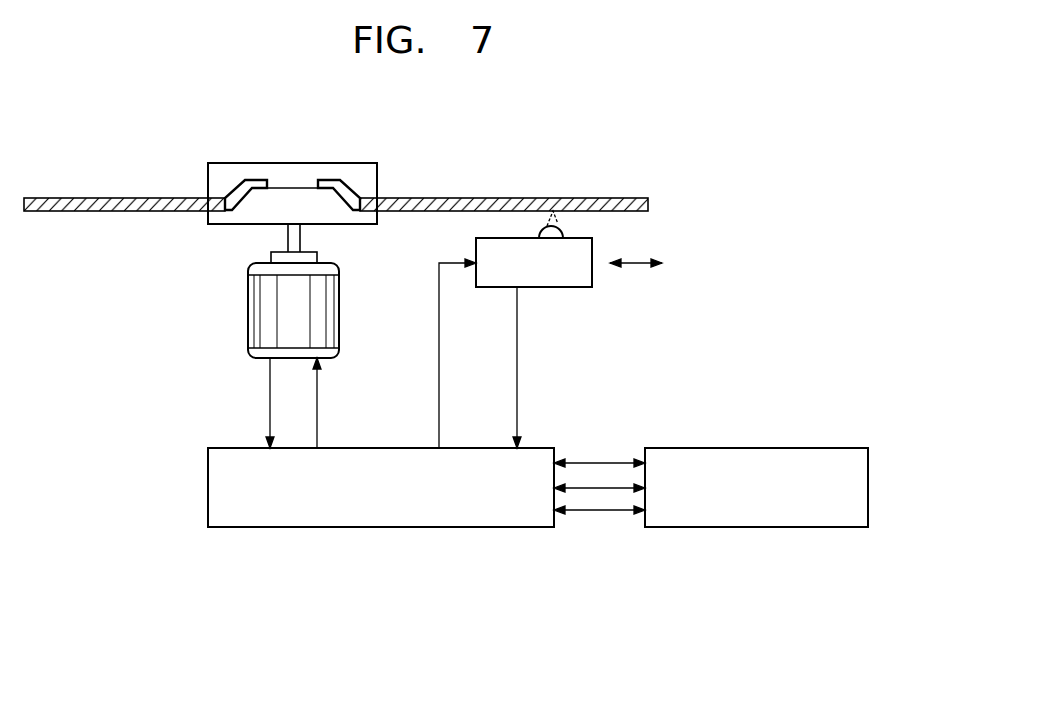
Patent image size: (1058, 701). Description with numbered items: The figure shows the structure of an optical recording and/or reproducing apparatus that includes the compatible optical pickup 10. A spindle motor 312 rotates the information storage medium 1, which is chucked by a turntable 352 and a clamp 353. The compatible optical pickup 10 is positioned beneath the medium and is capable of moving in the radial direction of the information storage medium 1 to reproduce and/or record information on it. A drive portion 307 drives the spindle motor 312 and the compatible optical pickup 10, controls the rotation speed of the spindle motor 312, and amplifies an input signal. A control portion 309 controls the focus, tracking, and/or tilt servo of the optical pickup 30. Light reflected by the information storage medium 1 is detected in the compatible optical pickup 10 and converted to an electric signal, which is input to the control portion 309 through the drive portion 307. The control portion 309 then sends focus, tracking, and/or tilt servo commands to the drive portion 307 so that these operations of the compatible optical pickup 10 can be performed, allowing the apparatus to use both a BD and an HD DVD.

The information storage medium 1 is at (607, 198).
The optical pickup 30 is at (553, 226).
The compatible optical pickup 10 is at (562, 280).
The spindle motor 312 is at (255, 311).
The turntable 352 is at (226, 215).
The clamp 353 is at (233, 173).
The drive portion 307 is at (377, 527).
The control portion 309 is at (767, 527).